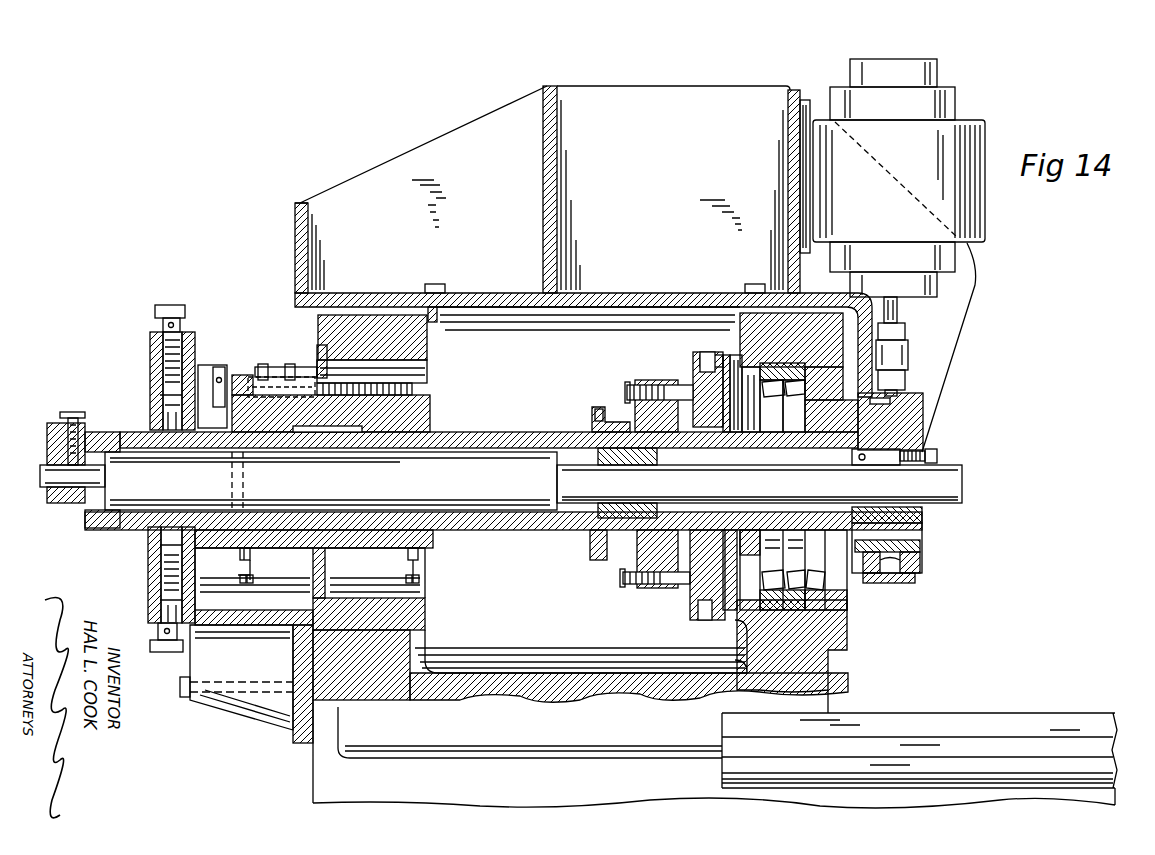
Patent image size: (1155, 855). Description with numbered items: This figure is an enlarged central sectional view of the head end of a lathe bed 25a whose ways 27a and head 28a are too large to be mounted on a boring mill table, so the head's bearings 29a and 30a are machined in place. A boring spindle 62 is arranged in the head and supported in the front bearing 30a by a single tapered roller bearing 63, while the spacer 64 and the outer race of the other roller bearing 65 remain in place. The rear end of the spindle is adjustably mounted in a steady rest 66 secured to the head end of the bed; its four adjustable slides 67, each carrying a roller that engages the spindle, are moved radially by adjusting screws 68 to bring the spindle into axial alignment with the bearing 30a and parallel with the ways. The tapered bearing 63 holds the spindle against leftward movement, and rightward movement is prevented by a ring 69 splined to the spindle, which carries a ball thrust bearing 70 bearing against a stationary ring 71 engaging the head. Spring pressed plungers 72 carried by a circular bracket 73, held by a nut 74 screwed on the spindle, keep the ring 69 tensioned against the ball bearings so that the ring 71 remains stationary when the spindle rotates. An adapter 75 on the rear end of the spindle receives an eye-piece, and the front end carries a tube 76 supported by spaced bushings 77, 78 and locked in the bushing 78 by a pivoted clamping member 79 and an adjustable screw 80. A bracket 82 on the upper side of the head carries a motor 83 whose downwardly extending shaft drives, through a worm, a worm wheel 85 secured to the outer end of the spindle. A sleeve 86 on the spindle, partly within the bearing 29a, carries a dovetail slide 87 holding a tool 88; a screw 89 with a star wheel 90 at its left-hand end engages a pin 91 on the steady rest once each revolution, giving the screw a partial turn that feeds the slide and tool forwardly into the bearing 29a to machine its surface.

The bracket 82 is at (583, 241).
The motor 83 is at (947, 103).
The head 28a is at (318, 318).
The tool 88 is at (318, 356).
The dovetail slide 87 is at (272, 366).
The star wheel 90 is at (219, 367).
The pin 91 is at (203, 365).
The adjustable slides 67 is at (150, 425).
The screw 89 is at (405, 385).
The sleeve 86 is at (430, 412).
The boring spindle 62 is at (503, 433).
The tube 76 is at (759, 483).
The adapter 75 is at (92, 530).
The adjusting screws 68 is at (148, 588).
The bearing 29a is at (395, 598).
The steady rest 66 is at (236, 677).
The ways 27a is at (1003, 718).
The lathe bed 25a is at (1120, 786).
The bushing 77 is at (590, 542).
The ring 69 is at (690, 593).
The ball thrust bearing 70 is at (712, 620).
The stationary ring 71 is at (725, 355).
The spring pressed plungers 72 is at (695, 385).
The circular bracket 73 is at (645, 380).
The nut 74 is at (595, 425).
The roller bearing 65 is at (751, 399).
The spacer 64 is at (782, 397).
The worm wheel 85 is at (925, 430).
The adjustable screw 80 is at (938, 452).
The pivoted clamping member 79 is at (870, 465).
The bushing 78 is at (915, 517).
The roller bearing 63 is at (850, 590).
The front bearing 30a is at (850, 605).